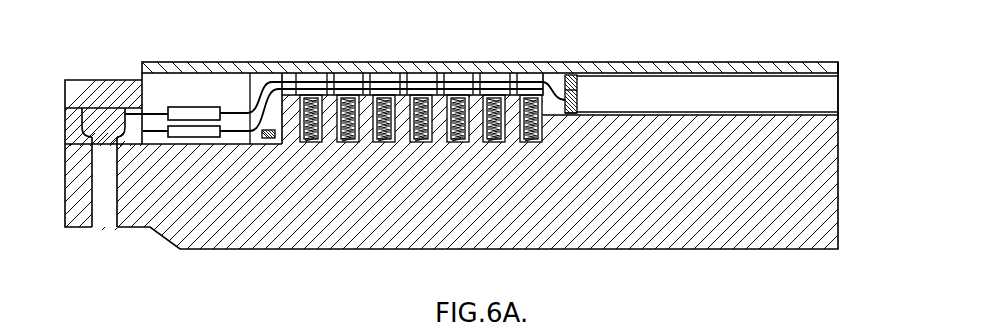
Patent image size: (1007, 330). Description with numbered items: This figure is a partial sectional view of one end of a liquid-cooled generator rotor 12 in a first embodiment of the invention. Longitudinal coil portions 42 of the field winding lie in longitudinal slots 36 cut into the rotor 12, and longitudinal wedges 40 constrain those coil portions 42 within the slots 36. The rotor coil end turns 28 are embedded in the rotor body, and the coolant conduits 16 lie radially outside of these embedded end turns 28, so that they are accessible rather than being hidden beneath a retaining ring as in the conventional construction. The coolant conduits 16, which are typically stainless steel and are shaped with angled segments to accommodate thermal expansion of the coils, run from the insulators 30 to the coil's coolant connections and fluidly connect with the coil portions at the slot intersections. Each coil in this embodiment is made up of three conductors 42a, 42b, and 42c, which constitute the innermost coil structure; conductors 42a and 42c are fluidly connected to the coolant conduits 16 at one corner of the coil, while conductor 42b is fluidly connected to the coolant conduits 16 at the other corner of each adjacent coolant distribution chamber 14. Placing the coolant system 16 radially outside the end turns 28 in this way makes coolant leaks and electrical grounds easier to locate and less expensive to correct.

The rotor 12 is at (767, 230).
The coolant distribution chamber 14 is at (68, 118).
The coolant conduits 16 is at (159, 118).
The rotor coil end turns 28 is at (310, 142).
The insulators 30 is at (207, 126).
The longitudinal slots 36 is at (822, 114).
The longitudinal wedges 40 is at (341, 62).
The longitudinal coil portions 42 is at (752, 51).
The conductor 42a is at (576, 76).
The conductor 42b is at (578, 92).
The conductor 42c is at (578, 110).